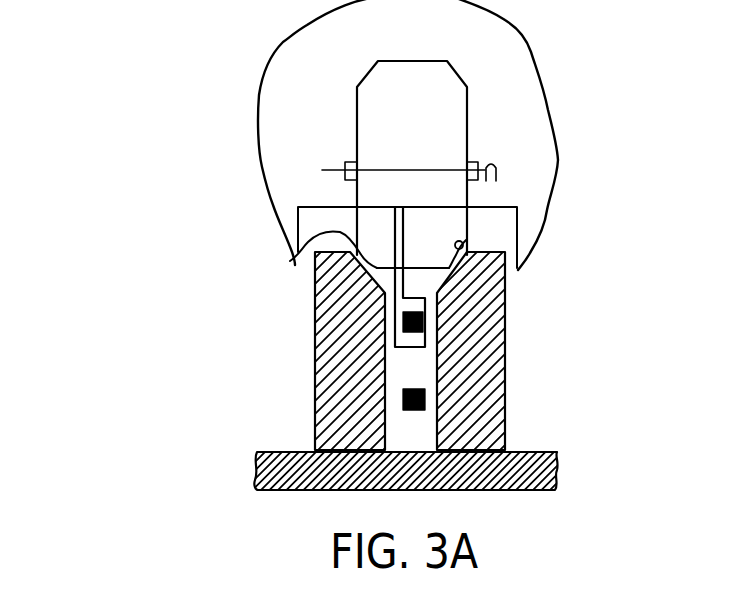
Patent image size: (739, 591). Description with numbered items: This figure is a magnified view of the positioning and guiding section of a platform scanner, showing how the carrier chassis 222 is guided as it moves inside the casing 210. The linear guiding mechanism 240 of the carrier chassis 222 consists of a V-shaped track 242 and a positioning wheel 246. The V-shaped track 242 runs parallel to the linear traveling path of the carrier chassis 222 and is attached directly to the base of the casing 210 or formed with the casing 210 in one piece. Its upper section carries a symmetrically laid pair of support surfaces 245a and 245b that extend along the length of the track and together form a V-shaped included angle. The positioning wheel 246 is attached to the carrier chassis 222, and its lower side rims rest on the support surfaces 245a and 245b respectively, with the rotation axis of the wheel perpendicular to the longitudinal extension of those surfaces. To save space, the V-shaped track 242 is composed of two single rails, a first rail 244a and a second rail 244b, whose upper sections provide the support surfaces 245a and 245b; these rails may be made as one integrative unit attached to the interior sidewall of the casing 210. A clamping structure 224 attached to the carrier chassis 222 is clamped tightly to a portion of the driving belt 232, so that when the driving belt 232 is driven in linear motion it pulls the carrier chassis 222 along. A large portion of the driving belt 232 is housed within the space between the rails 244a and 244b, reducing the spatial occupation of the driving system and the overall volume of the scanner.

The casing 210 is at (553, 470).
The carrier chassis 222 is at (303, 67).
The clamping structure 224 is at (425, 305).
The driving belt 232 is at (423, 323).
The linear guiding mechanism 240 is at (117, 275).
The V-shaped track 242 is at (180, 318).
The first rail 244a is at (343, 325).
The second rail 244b is at (450, 428).
The support surface 245a is at (290, 261).
The support surface 245b is at (466, 240).
The positioning wheel 246 is at (337, 300).